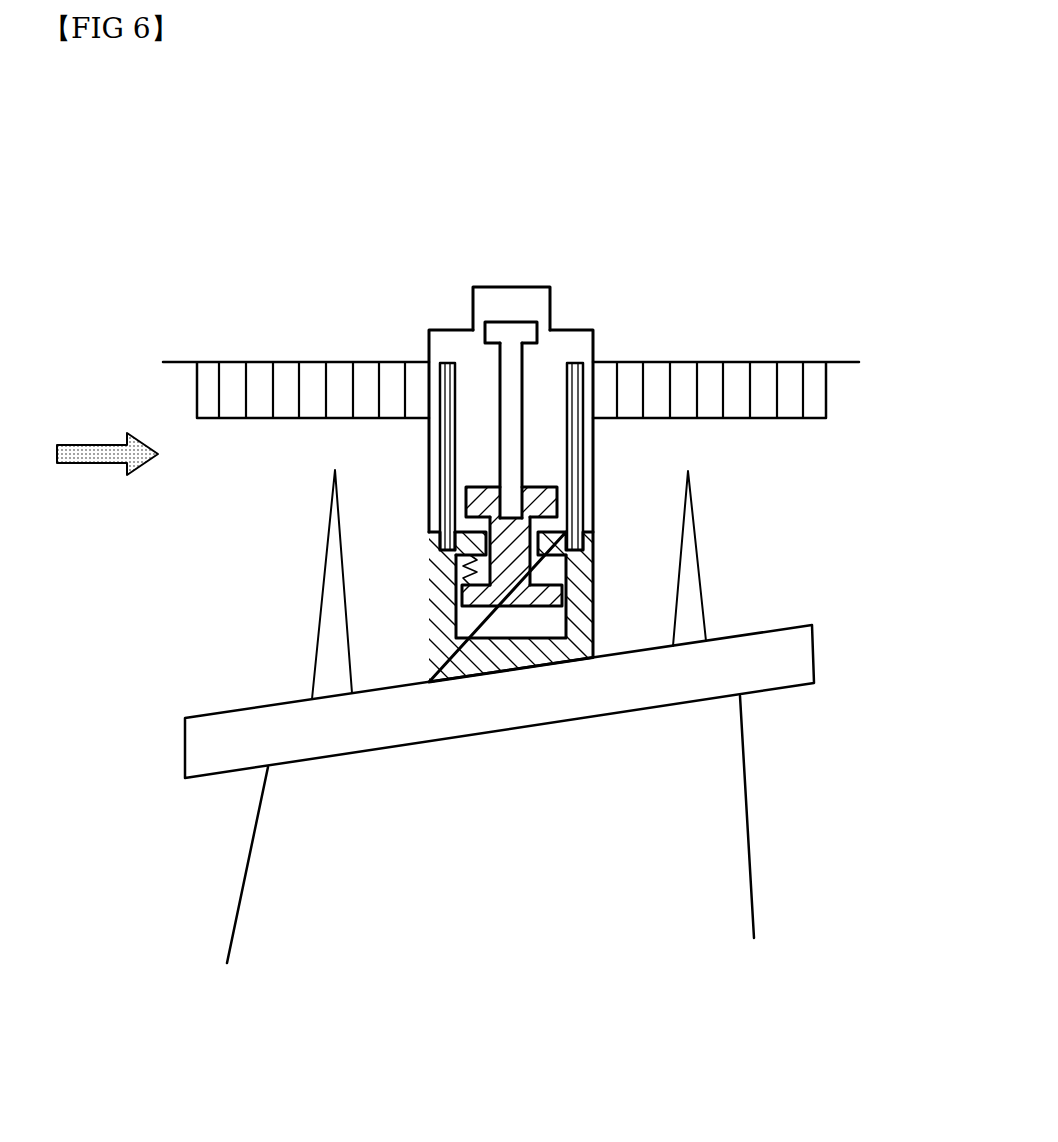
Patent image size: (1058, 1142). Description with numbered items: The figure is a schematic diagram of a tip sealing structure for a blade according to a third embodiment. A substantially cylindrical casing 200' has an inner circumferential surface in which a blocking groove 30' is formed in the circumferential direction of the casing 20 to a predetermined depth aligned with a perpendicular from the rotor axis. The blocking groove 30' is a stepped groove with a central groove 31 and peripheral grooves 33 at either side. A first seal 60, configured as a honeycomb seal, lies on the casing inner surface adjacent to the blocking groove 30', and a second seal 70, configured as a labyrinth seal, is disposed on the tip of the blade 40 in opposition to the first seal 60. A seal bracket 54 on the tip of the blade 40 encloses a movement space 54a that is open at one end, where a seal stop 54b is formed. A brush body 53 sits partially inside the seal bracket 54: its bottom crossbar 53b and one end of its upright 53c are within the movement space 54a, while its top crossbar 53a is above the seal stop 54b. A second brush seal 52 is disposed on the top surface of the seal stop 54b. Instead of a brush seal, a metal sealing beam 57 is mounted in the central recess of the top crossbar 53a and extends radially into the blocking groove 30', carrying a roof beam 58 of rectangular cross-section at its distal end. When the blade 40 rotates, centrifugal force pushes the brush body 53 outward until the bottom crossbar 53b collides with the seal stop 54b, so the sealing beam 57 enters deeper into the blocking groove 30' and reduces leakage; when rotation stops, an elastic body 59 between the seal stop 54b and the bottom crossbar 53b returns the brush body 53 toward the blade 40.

The casing 20 is at (735, 360).
The casing 200' is at (296, 315).
The first seal 60 is at (812, 395).
The blocking groove 30' is at (561, 324).
The central groove 31 is at (508, 287).
The peripheral groove 33 is at (573, 328).
The roof beam 58 is at (502, 329).
The sealing beam 57 is at (515, 440).
The second brush seal 52 is at (447, 447).
The brush body 53 is at (609, 533).
The top crossbar 53a is at (540, 500).
The upright 53c is at (513, 560).
The bottom crossbar 53b is at (547, 597).
The elastic body 59 is at (470, 557).
The seal bracket 54 is at (473, 590).
The movement space 54a is at (472, 629).
The seal stop 54b is at (472, 542).
The second seal 70 is at (692, 628).
The blade 40 is at (717, 808).